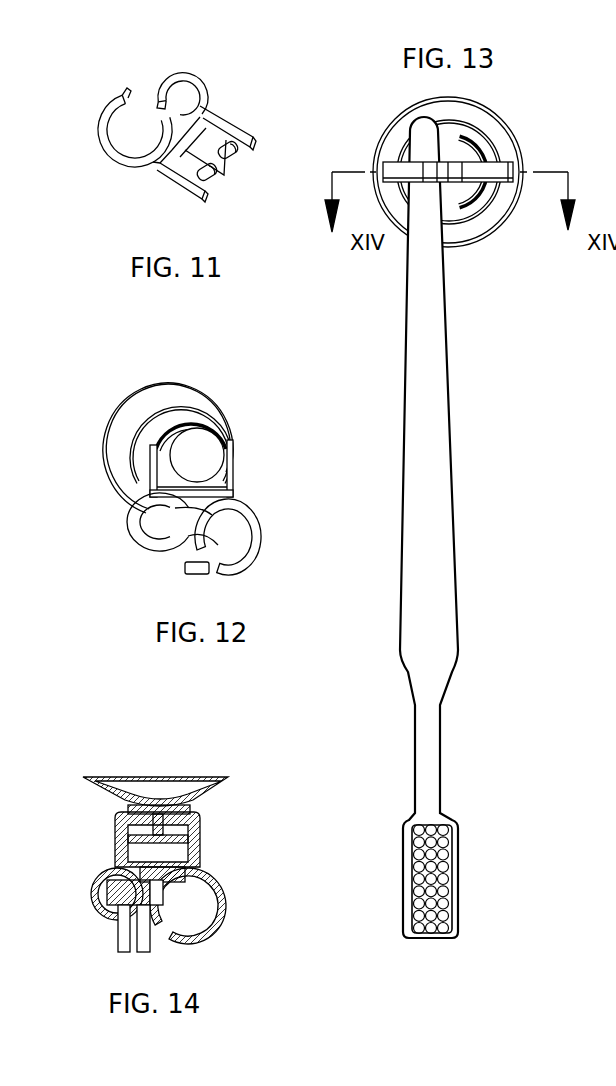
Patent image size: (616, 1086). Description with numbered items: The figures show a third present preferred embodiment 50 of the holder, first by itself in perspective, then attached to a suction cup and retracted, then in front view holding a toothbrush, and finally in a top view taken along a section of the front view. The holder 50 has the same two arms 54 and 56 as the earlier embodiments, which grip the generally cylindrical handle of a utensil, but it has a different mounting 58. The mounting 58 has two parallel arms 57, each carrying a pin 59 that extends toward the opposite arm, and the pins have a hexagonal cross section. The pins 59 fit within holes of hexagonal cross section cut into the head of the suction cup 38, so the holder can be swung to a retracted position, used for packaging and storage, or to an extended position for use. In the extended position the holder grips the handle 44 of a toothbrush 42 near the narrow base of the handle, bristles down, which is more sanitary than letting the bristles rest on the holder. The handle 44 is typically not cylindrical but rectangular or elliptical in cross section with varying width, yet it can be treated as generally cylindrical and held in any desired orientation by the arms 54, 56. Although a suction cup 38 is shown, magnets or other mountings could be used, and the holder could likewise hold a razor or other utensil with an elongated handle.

In FIG. 12, the suction cup 38 is at (162, 408).
In FIG. 13, the suction cup 38 is at (465, 222).
In FIG. 14, the suction cup 38 is at (93, 778).
In FIG. 13, the toothbrush 42 is at (468, 543).
In FIG. 13, the handle 44 is at (418, 445).
In FIG. 11, the third present preferred embodiment 50 is at (118, 90).
In FIG. 12, the third present preferred embodiment 50 is at (262, 520).
In FIG. 13, the third present preferred embodiment 50 is at (507, 155).
In FIG. 14, the third present preferred embodiment 50 is at (215, 933).
In FIG. 11, the arm 54 is at (213, 80).
In FIG. 11, the arm 56 is at (100, 138).
In FIG. 14, the parallel arm 57 is at (195, 847).
In FIG. 11, the mounting 58 is at (230, 123).
In FIG. 11, the pin 59 is at (233, 157).
In FIG. 14, the pin 59 is at (175, 827).